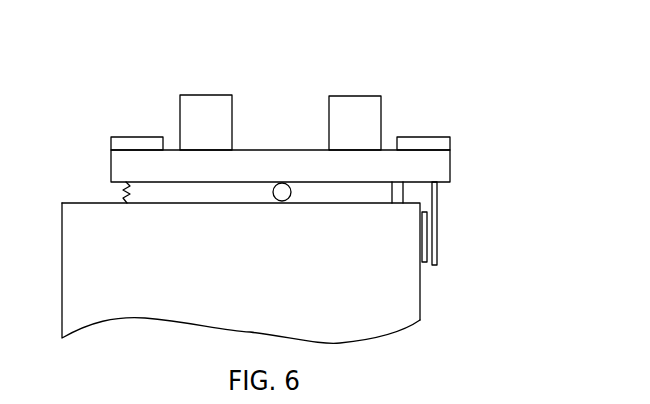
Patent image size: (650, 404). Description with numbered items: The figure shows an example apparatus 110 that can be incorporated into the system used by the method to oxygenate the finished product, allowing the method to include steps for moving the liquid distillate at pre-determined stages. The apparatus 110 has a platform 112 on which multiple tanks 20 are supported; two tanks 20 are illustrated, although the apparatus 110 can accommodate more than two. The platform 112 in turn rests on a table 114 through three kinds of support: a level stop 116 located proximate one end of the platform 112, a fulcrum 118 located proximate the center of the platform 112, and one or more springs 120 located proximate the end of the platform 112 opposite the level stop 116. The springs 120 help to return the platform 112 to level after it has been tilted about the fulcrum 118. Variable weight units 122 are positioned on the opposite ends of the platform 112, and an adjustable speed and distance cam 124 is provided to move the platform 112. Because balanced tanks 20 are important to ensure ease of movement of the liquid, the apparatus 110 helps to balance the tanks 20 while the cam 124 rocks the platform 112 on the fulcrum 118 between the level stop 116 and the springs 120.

The apparatus 110 is at (477, 93).
The platform 112 is at (450, 168).
The tank 20 is at (200, 95).
The variable weight unit 122 is at (135, 137).
The fulcrum 118 is at (282, 183).
The spring 120 is at (120, 192).
The table 114 is at (252, 271).
The level stop 116 is at (404, 192).
The adjustable speed and distance cam 124 is at (437, 240).